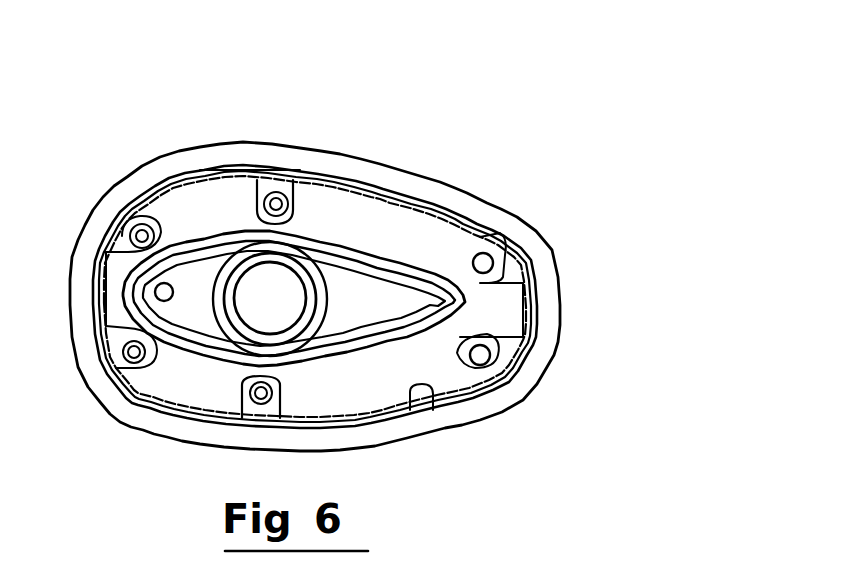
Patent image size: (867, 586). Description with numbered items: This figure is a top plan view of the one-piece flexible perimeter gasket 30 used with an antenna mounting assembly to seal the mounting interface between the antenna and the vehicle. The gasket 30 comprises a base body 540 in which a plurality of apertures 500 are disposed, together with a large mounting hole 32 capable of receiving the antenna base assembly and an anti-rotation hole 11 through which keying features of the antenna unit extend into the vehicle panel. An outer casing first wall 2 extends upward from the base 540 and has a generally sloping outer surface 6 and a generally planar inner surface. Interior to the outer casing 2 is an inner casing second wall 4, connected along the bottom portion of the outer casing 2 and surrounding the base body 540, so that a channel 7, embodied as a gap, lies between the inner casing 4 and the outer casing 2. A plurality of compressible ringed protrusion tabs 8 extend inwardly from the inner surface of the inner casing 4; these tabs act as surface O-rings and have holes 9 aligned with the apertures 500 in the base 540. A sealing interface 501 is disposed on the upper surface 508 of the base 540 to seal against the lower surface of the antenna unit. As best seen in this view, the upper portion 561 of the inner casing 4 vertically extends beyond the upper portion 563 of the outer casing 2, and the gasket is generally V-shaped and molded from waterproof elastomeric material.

The outer casing first wall 2 is at (343, 296).
The inner casing second wall 4 is at (361, 438).
The sloping outer surface 6 is at (338, 297).
The channel 7 is at (315, 339).
The compressible ringed protrusion tabs 8 is at (322, 164).
The holes 9 is at (300, 155).
The anti-rotation hole 11 is at (115, 385).
The perimeter gasket 30 is at (609, 162).
The mounting hole 32 is at (226, 389).
The apertures 500 is at (580, 281).
The sealing interface 501 is at (330, 227).
The upper surface 508 is at (372, 399).
The base body 540 is at (328, 197).
The upper portion of the inner casing 561 is at (124, 163).
The upper portion of the outer casing 563 is at (247, 101).